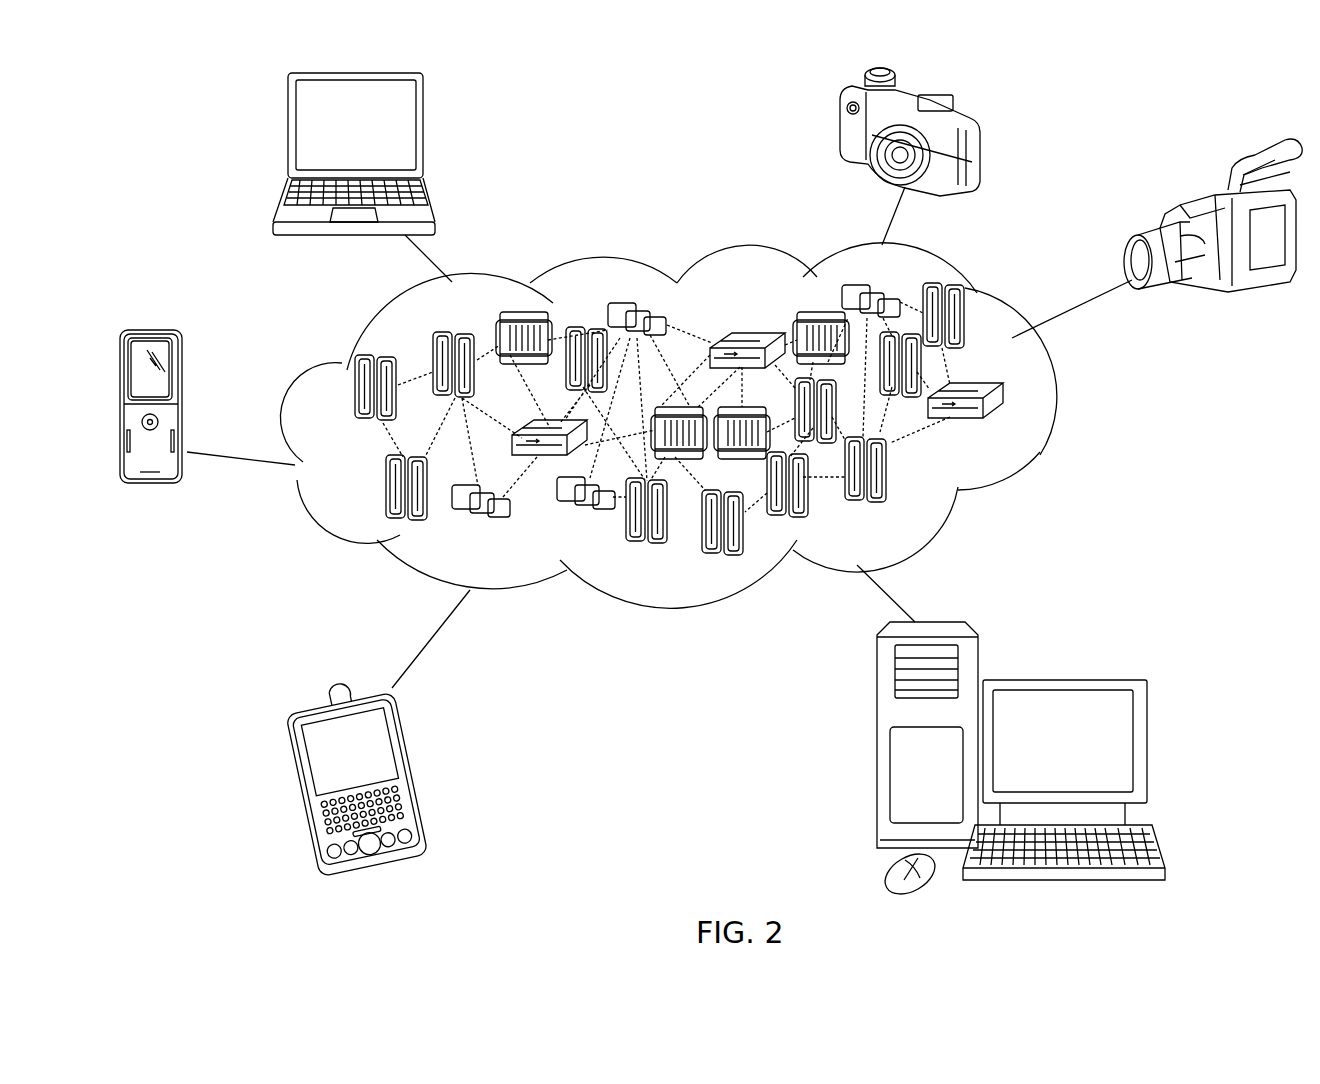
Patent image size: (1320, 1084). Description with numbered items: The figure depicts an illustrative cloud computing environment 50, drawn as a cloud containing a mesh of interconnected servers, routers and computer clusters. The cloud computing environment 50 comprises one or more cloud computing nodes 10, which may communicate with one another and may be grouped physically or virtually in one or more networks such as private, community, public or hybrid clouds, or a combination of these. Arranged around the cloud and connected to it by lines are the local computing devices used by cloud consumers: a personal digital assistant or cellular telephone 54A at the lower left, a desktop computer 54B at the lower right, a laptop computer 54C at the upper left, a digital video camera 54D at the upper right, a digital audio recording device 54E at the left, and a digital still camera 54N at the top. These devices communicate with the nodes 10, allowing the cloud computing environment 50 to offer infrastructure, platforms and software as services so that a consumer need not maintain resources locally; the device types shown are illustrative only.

The cloud computing node 10 is at (1010, 430).
The cloud computing environment 50 is at (1060, 403).
The personal digital assistant (PDA) or cellular telephone 54A is at (415, 770).
The desktop computer 54B is at (1060, 680).
The laptop computer 54C is at (423, 132).
The digital video camera 54D is at (1228, 275).
The digital audio recording device 54E is at (143, 485).
The digital still camera 54N is at (838, 138).